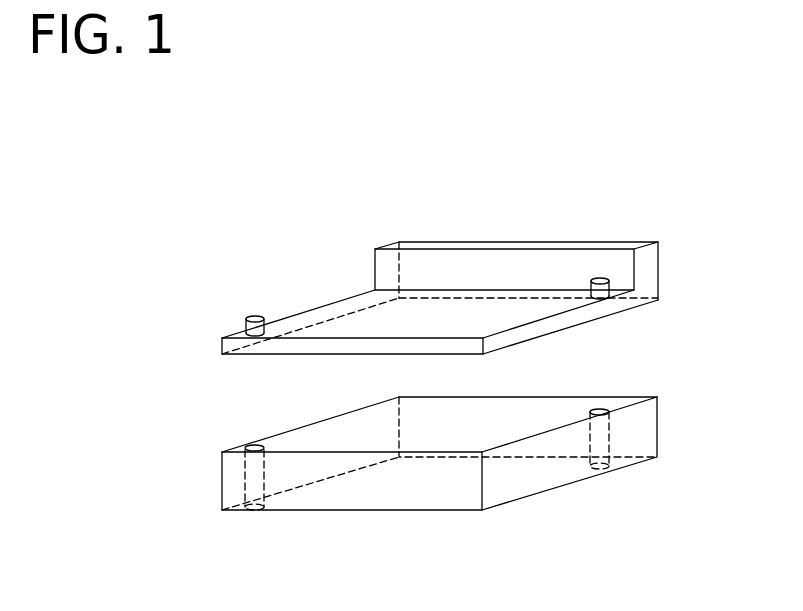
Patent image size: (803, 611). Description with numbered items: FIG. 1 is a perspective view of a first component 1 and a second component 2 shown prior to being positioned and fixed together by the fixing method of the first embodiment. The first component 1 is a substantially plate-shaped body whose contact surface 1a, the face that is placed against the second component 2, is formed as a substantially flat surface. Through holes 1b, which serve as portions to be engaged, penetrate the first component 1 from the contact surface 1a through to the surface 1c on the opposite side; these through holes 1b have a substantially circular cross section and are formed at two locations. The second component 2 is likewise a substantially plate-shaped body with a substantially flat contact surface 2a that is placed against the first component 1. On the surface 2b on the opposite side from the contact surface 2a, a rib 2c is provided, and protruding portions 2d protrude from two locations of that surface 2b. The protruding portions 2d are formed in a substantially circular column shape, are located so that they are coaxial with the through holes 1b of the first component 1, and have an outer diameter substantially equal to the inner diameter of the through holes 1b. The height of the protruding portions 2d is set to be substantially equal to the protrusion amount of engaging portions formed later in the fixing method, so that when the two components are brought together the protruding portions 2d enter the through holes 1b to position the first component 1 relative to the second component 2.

The first component 1 is at (480, 480).
The contact surface 1a is at (357, 432).
The through holes 1b is at (253, 509).
The surface on the opposite side 1c is at (530, 495).
The second component 2 is at (482, 270).
The contact surface 2a is at (546, 333).
The surface on the opposite side 2b is at (460, 313).
The rib 2c is at (647, 273).
The protruding portions 2d is at (257, 317).